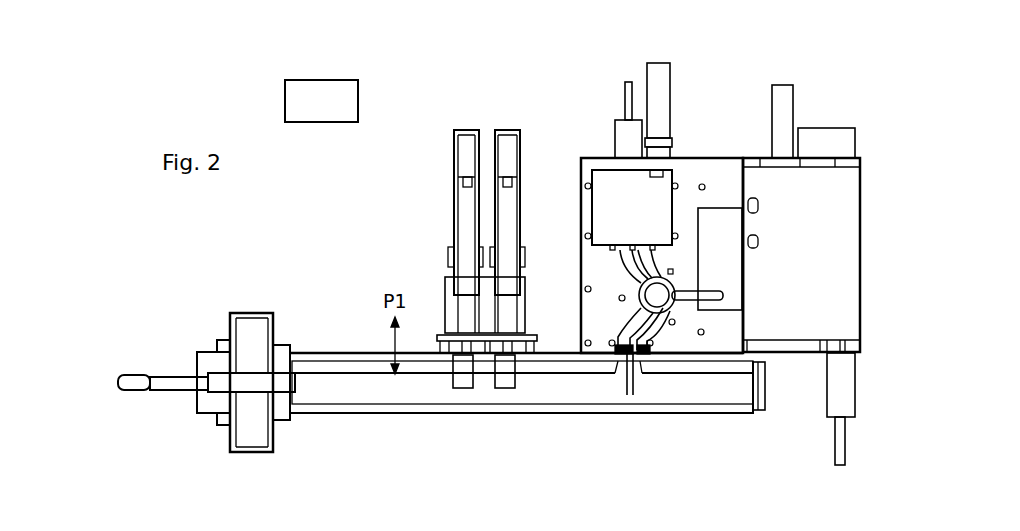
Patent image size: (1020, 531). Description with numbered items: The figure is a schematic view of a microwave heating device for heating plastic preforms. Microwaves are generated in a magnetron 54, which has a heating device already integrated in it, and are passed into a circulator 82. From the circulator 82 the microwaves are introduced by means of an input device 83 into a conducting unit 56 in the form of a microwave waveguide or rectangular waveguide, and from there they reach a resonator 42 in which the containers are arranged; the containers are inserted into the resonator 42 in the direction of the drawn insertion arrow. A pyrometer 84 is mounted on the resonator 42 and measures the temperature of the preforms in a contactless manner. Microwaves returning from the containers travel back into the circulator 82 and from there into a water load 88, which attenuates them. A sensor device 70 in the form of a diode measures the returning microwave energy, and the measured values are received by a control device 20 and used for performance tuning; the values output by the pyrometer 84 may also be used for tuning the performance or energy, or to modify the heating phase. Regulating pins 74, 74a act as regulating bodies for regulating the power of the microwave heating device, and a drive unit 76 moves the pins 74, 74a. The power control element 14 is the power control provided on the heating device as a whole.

The power control elements 14 is at (433, 148).
The control device 20 is at (310, 113).
The resonator 42 is at (220, 383).
The magnetron 54 is at (802, 190).
The conducting unit 56 is at (403, 380).
The sensor device 70 is at (624, 160).
The regulating pin 74 is at (460, 375).
The regulating pin 74a is at (508, 375).
The drive unit 76 is at (465, 224).
The circulator 82 is at (665, 300).
The input device 83 is at (628, 395).
The pyrometer 84 is at (134, 373).
The water load 88 is at (647, 197).